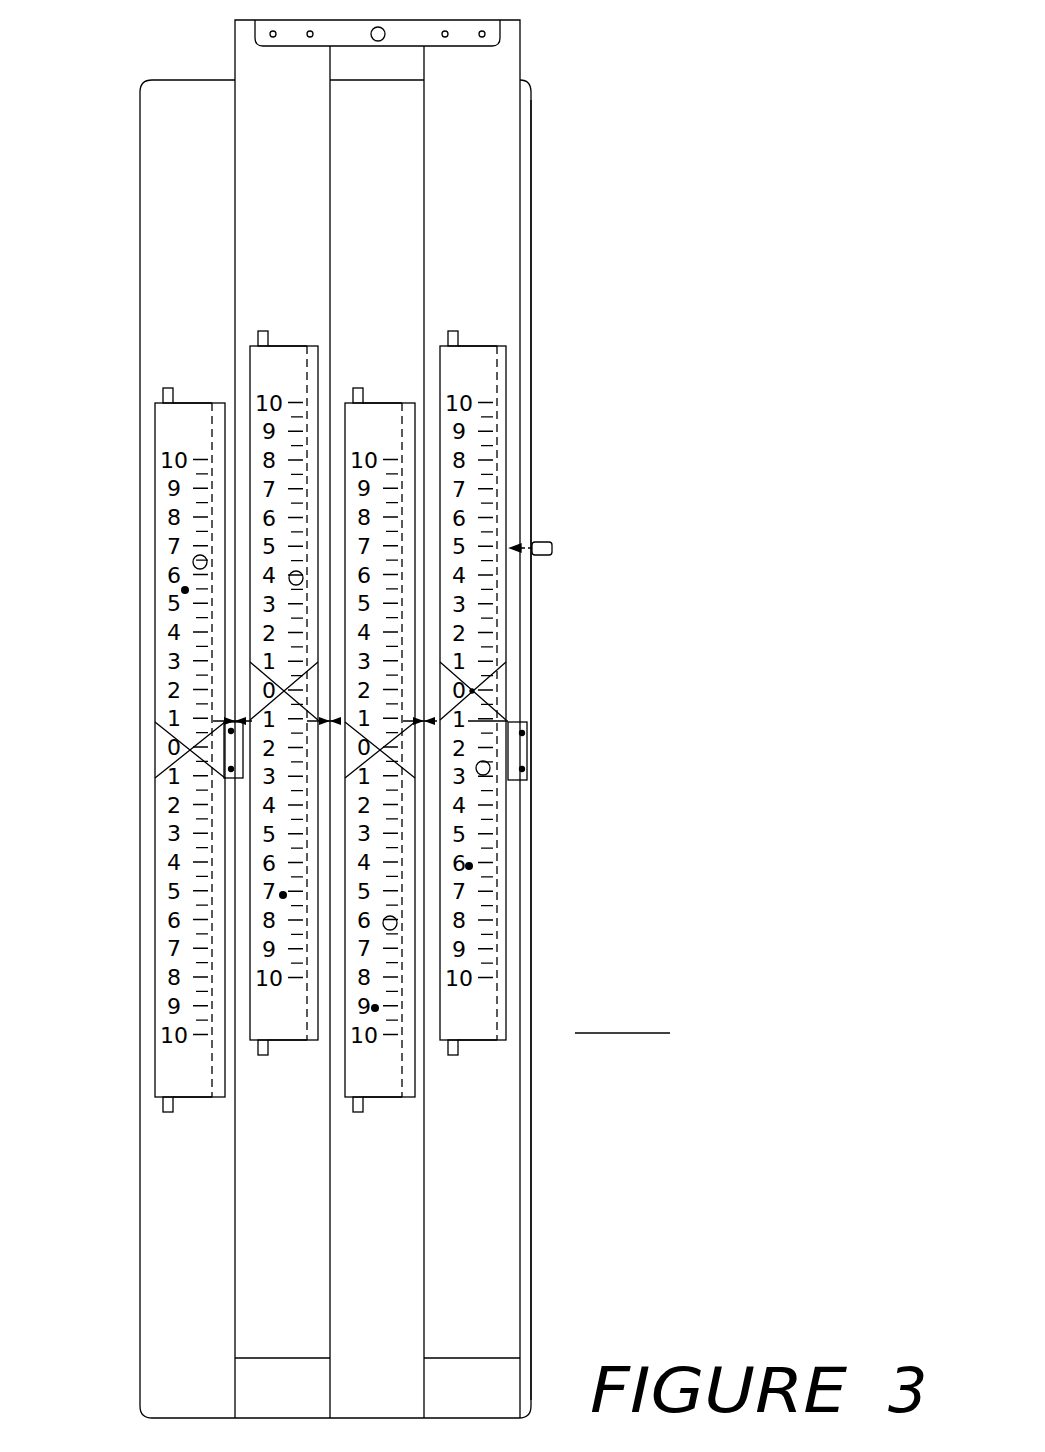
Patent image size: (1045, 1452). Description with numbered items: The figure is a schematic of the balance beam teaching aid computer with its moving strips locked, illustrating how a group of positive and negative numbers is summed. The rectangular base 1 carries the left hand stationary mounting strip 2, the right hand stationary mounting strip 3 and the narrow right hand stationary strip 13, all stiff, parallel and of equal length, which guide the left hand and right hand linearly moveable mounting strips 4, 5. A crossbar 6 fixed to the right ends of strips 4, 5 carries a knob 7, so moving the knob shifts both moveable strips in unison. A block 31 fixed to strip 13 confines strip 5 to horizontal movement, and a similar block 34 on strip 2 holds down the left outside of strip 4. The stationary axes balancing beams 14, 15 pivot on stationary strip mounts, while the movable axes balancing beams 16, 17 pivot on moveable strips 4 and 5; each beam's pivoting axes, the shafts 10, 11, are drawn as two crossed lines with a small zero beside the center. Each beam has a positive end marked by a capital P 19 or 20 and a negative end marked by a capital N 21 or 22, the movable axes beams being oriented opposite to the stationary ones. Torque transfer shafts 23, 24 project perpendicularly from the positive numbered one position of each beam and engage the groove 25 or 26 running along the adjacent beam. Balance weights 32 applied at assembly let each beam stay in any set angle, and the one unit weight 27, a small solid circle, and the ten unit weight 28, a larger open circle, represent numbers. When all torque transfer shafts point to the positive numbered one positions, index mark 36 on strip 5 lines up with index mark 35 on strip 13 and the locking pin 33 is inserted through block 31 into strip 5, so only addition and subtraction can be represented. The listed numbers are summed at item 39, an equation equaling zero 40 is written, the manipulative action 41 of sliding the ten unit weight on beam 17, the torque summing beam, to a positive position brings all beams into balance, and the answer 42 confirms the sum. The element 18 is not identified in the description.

The rectangular base 1 is at (279, 1398).
The left hand stationary mounting strip 2 is at (180, 117).
The right hand stationary mounting strip 3 is at (370, 115).
The left hand linearly moveable mounting strip 4 is at (278, 115).
The right hand linearly moveable mounting strip 5 is at (465, 127).
The crossbar 6 is at (385, 40).
The knob 7 is at (424, 34).
The axle 10 is at (175, 750).
The axle 11 is at (487, 720).
The right hand narrow stationary strip 13 is at (527, 620).
The left hand stationary axes balancing beam 14 is at (198, 1087).
The right hand stationary axes balancing beam 15 is at (388, 1087).
The left hand movable axes balancing beam 16 is at (292, 1030).
The right hand movable axes balancing beam 17 is at (537, 715).
The beam sign label 18 is at (460, 383).
The capital letter P indication 19 is at (187, 408).
The capital letter P indication 20 is at (277, 1033).
The capital letter N indication 21 is at (180, 1092).
The capital letter N indication 22 is at (283, 352).
The torque transfer shaft 23 is at (360, 721).
The torque transfer shaft 24 is at (473, 695).
The groove 25 is at (218, 405).
The groove 26 is at (313, 345).
The one unit weight 27 is at (180, 590).
The ten unit weight 28 is at (192, 562).
The block 31 is at (520, 748).
The balance weights 32 is at (163, 397).
The locking pin 33 is at (550, 543).
The block 34 is at (225, 776).
The index mark 35 is at (530, 542).
The index mark 36 is at (513, 547).
The sum of listed numbers 39 is at (667, 1048).
The equation 40 is at (725, 1105).
The manipulative action 41 is at (855, 1192).
The teaching aid answer 42 is at (705, 1245).